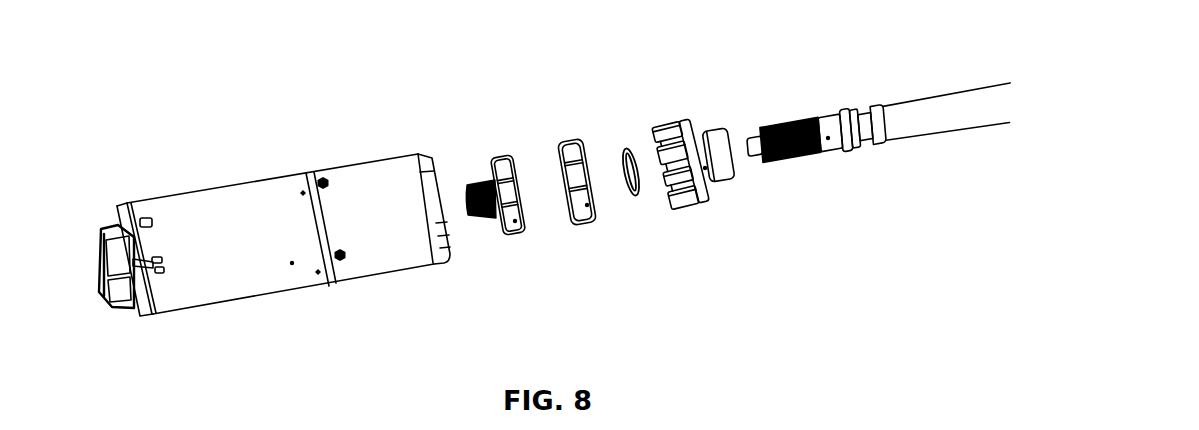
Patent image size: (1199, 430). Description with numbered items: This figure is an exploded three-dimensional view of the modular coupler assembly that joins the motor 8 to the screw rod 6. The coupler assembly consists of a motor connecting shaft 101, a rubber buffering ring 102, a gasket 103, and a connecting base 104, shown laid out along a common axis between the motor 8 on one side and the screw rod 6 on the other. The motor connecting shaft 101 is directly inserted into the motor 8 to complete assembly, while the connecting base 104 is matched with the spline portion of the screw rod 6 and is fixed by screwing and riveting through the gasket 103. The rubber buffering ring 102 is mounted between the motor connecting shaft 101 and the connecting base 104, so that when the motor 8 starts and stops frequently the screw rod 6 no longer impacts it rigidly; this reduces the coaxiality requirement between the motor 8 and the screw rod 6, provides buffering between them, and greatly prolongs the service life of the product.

The motor 8 is at (292, 263).
The motor connecting shaft 101 is at (517, 234).
The rubber buffering ring 102 is at (588, 229).
The gasket 103 is at (633, 197).
The connecting base 104 is at (705, 170).
The screw rod 6 is at (828, 140).